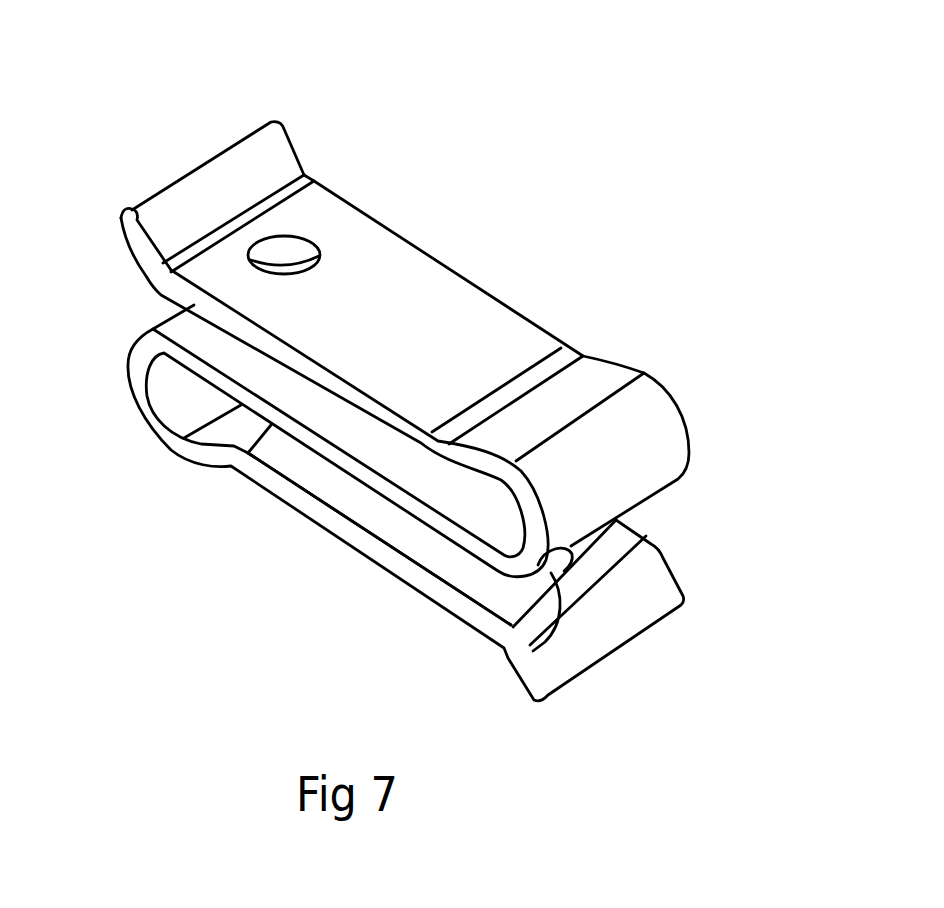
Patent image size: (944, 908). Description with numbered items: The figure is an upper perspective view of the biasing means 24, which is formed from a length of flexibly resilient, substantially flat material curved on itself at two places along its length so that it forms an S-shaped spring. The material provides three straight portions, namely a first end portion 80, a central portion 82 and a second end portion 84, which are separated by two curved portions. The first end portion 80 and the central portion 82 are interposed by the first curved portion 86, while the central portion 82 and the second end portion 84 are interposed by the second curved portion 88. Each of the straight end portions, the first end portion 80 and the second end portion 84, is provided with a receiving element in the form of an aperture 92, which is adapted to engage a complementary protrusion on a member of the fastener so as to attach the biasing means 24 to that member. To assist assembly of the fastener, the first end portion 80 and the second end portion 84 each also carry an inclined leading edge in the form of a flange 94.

The biasing means 24 is at (415, 381).
The first end portion 80 is at (433, 310).
The central portion 82 is at (337, 420).
The second end portion 84 is at (383, 523).
The first curved portion 86 is at (622, 468).
The second curved portion 88 is at (146, 403).
The aperture 92 is at (283, 247).
The flange 94 is at (202, 194).